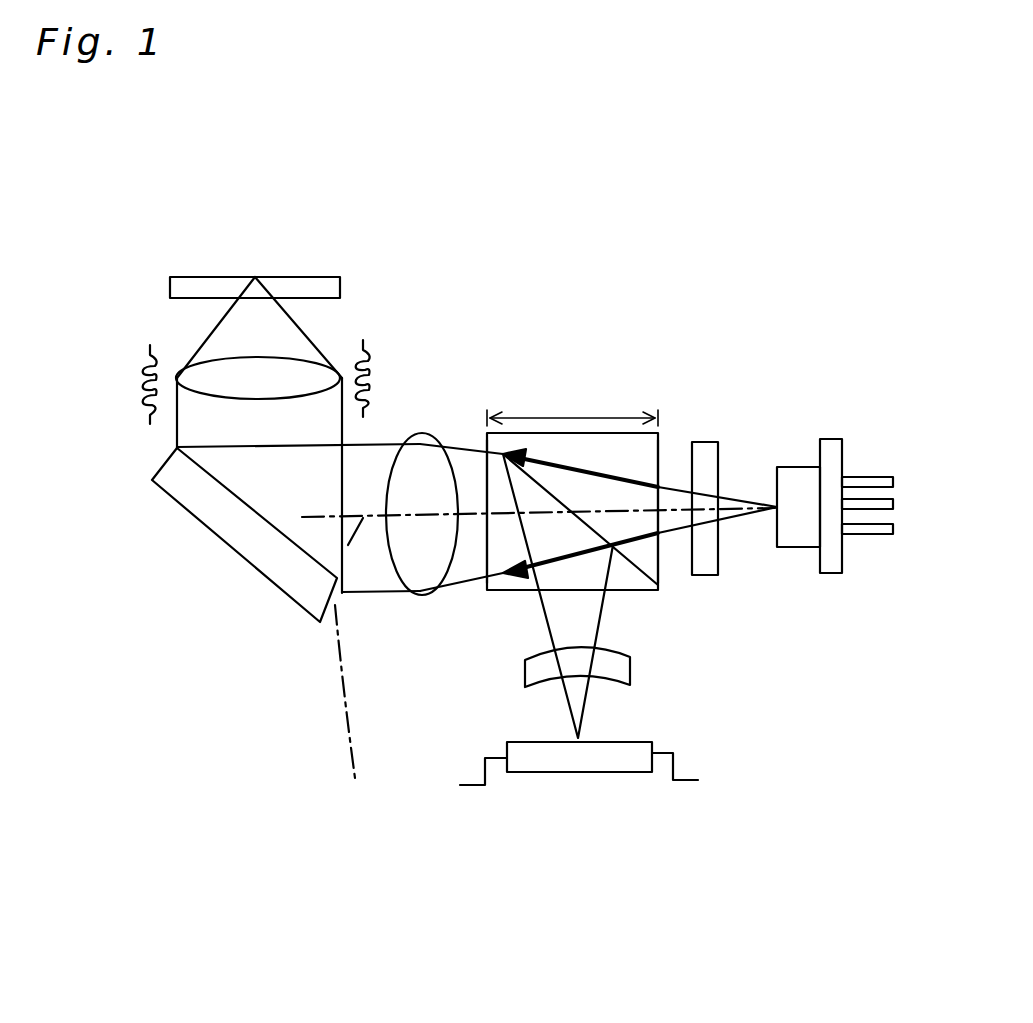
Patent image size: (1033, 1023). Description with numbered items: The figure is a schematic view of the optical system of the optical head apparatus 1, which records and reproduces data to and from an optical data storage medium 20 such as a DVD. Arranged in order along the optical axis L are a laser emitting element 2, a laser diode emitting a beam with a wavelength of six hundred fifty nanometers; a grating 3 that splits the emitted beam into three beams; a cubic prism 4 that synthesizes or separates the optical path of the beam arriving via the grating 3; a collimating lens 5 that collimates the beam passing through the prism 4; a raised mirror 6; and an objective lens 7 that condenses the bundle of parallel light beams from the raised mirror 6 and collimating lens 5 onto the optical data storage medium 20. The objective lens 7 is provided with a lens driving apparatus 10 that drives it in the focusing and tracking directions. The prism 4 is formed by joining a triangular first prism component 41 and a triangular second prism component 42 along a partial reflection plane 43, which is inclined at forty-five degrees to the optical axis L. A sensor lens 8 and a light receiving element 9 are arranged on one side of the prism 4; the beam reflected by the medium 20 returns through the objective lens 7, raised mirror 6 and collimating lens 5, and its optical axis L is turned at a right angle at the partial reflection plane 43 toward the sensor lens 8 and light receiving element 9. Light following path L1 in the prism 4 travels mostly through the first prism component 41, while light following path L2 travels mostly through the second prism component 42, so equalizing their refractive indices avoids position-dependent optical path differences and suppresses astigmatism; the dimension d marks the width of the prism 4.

The optical head apparatus 1 is at (531, 215).
The laser emitting element 2 is at (800, 473).
The grating 3 is at (707, 447).
The cubic prism 4 is at (606, 585).
The first prism component 41 is at (662, 550).
The second prism component 42 is at (507, 597).
The partial reflection plane 43 is at (637, 577).
The collimating lens 5 is at (413, 595).
The raised mirror 6 is at (311, 592).
The objective lens 7 is at (217, 397).
The sensor lens 8 is at (533, 677).
The light receiving element 9 is at (552, 760).
The lens driving apparatus 10 is at (375, 385).
The optical data storage medium 20 is at (327, 284).
The optical axis L is at (538, 661).
The optical path of first light component L1 is at (623, 470).
The optical path of second light component L2 is at (571, 553).
The beam splitter thickness d is at (572, 410).